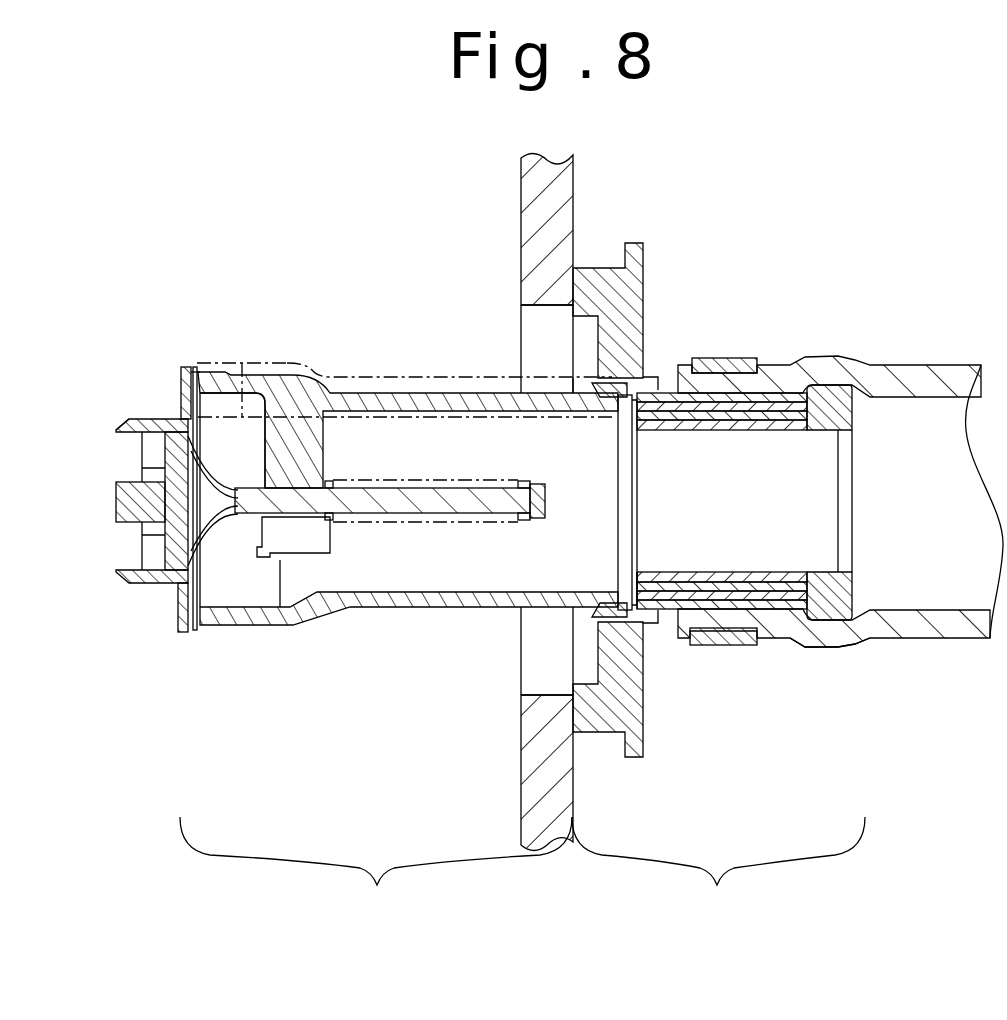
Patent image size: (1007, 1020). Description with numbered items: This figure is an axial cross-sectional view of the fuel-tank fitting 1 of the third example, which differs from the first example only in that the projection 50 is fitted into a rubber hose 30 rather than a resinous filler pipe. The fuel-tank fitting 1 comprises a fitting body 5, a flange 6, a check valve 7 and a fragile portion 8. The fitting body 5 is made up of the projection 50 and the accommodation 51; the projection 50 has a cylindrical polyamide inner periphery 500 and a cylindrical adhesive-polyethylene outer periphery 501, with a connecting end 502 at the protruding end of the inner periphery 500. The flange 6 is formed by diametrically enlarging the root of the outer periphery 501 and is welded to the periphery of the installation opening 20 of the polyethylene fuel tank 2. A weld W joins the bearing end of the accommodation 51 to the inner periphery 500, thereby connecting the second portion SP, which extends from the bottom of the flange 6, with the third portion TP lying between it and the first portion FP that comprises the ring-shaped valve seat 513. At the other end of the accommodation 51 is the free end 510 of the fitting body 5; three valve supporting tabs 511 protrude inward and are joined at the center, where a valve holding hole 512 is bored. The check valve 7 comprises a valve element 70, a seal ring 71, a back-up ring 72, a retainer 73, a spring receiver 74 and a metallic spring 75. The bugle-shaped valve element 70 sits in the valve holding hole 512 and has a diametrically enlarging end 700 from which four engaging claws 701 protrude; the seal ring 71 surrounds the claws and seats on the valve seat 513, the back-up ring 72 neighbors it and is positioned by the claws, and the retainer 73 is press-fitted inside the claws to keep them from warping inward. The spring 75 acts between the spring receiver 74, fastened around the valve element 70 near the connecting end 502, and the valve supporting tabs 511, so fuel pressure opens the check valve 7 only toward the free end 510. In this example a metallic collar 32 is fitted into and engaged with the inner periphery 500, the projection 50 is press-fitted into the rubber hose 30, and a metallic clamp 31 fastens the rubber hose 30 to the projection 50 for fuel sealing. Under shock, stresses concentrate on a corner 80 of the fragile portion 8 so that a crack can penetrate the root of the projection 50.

The fuel-tank fitting 1 is at (265, 200).
The fuel tank 2 is at (545, 150).
The fitting body 5 is at (403, 315).
The flange 6 is at (644, 290).
The check valve 7 is at (393, 468).
The fragile portion 8 is at (632, 448).
The installation opening 20 is at (522, 340).
The rubber hose 30 is at (838, 366).
The metallic clamp 31 is at (722, 646).
The metallic collar 32 is at (795, 572).
The projection 50 is at (718, 869).
The accommodation 51 is at (376, 869).
The valve element 70 is at (422, 500).
The seal ring 71 is at (193, 378).
The back-up ring 72 is at (190, 378).
The retainer 73 is at (150, 470).
The spring receiver 74 is at (530, 520).
The spring 75 is at (455, 482).
The corner 80 is at (630, 422).
The inner periphery 500 is at (652, 572).
The outer periphery 501 is at (660, 612).
The connecting end 502 is at (830, 625).
The free end 510 is at (203, 620).
The valve supporting tabs 511 is at (325, 467).
The valve holding hole 512 is at (260, 492).
The valve seat 513 is at (180, 622).
The diametrically enlarging end 700 is at (207, 533).
The engaging claws 701 is at (135, 385).
The first portion FP is at (222, 363).
The third portion TP is at (385, 375).
The weld W is at (578, 385).
The second portion SP is at (650, 372).